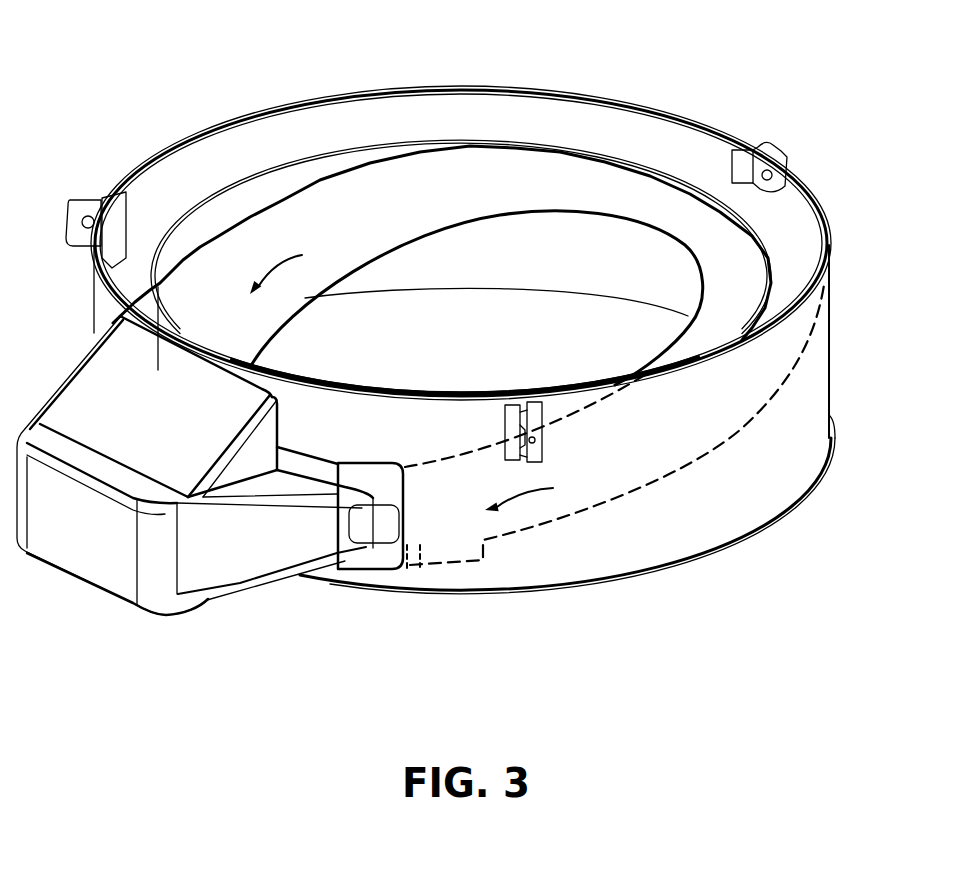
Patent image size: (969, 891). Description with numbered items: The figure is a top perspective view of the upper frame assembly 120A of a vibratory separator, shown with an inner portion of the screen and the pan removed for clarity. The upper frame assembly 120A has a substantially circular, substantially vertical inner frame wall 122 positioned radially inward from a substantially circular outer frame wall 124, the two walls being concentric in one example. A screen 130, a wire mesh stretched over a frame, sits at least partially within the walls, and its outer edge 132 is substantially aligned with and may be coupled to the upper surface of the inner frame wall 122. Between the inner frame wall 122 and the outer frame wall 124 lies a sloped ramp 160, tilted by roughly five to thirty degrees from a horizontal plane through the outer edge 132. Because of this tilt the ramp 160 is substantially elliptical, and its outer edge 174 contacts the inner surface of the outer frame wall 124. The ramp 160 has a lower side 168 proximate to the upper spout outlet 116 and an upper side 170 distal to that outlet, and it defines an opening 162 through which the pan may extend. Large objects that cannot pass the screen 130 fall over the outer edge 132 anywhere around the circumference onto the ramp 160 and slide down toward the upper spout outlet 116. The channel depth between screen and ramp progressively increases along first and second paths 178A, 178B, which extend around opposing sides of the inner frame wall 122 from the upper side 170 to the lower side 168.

The upper frame assembly 120A is at (175, 55).
The upper spout outlet 116 is at (97, 550).
The inner frame wall 122 is at (765, 313).
The outer frame wall 124 is at (833, 348).
The screen 130 is at (320, 153).
The outer edge 132 is at (320, 153).
The ramp 160 is at (728, 411).
The opening 162 is at (600, 215).
The lower side 168 is at (300, 467).
The upper side 170 is at (710, 163).
The outer edge 174 is at (537, 140).
The first path 178A is at (301, 266).
The second path 178B is at (545, 490).